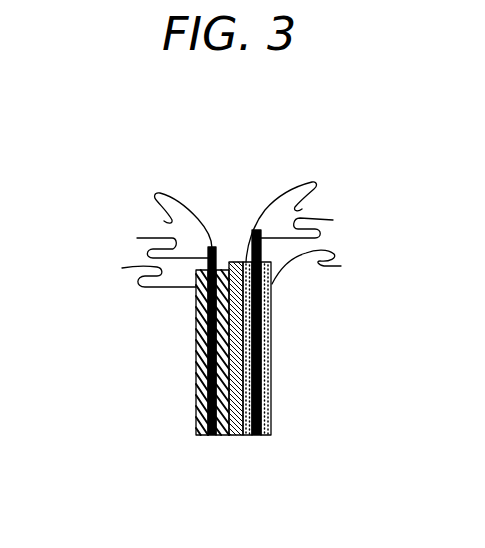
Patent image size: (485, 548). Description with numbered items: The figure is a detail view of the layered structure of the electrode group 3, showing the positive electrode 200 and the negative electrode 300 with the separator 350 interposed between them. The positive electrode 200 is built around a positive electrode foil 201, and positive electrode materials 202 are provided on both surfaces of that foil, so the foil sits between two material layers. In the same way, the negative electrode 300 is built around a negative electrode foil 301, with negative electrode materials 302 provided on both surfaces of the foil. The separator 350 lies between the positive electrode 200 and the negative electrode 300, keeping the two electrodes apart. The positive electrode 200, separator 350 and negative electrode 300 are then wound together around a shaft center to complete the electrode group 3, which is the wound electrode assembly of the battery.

The electrode group 3 is at (97, 112).
The positive electrode 200 is at (179, 173).
The positive electrode foil 201 is at (159, 332).
The positive electrode materials 202 is at (165, 221).
The negative electrode 300 is at (416, 163).
The negative electrode foil 301 is at (307, 324).
The negative electrode materials 302 is at (300, 208).
The separator 350 is at (238, 435).